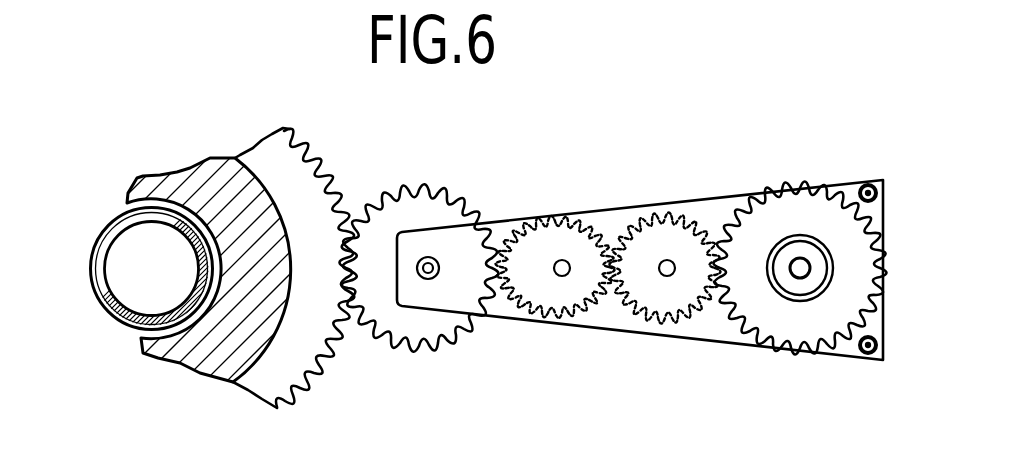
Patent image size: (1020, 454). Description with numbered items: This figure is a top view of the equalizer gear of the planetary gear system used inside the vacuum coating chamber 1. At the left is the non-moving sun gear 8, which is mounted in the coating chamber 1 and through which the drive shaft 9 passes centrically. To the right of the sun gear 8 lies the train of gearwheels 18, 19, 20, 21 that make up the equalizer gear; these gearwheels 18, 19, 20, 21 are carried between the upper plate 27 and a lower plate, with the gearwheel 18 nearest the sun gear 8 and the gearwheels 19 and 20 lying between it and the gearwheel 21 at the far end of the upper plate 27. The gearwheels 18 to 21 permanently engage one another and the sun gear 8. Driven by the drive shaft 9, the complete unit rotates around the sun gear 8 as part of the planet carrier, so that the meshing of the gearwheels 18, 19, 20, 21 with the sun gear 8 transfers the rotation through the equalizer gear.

The vacuum coating chamber 1 is at (198, 182).
The sun gear 8 is at (284, 387).
The drive shaft 9 is at (128, 327).
The gearwheel 18 is at (423, 335).
The gearwheel 19 is at (534, 310).
The gearwheel 20 is at (647, 293).
The gearwheel 21 is at (763, 313).
The upper plate 27 is at (721, 202).